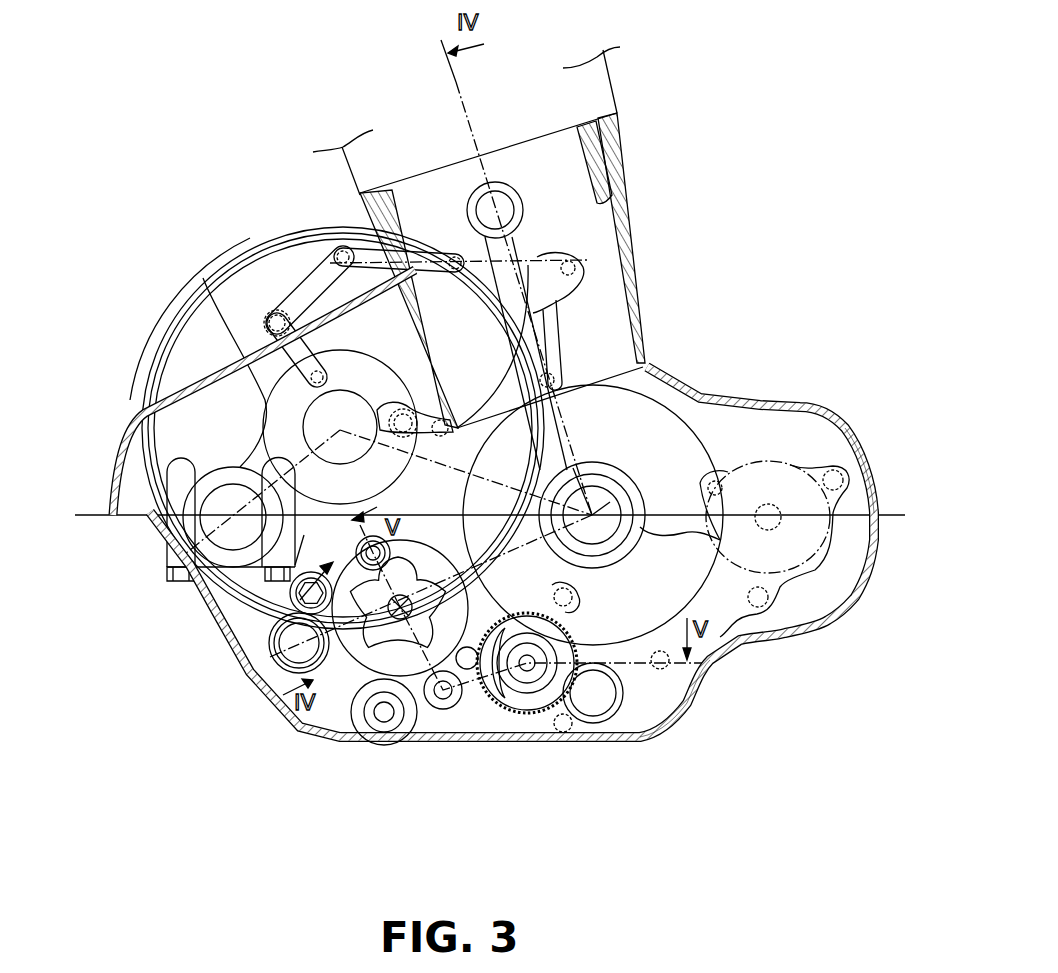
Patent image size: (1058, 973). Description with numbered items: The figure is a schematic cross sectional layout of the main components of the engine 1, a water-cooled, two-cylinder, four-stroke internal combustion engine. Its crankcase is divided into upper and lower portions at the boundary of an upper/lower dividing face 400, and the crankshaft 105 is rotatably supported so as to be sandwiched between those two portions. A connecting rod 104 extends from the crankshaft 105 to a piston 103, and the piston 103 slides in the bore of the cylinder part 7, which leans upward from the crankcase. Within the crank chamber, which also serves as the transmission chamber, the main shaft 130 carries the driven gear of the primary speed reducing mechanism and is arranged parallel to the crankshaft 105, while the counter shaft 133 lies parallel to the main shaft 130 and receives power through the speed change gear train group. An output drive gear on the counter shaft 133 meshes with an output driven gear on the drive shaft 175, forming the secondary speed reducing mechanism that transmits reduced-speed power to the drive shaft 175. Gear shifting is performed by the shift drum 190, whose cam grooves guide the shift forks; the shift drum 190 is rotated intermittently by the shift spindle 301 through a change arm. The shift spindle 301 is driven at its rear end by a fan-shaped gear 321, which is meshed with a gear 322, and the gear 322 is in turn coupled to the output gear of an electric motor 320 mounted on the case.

The engine 1 is at (300, 122).
The cylinder part 7 is at (565, 70).
The piston 103 is at (570, 180).
The connecting rod 104 is at (540, 305).
The crankshaft 105 is at (727, 410).
The main shaft 130 is at (212, 322).
The counter shaft 133 is at (173, 557).
The drive shaft 175 is at (277, 649).
The shift drum 190 is at (420, 548).
The shift spindle 301 is at (443, 693).
The electric motor 320 is at (693, 710).
The fan-shaped gear 321 is at (470, 697).
The gear 322 is at (530, 678).
The upper/lower dividing face 400 is at (895, 515).